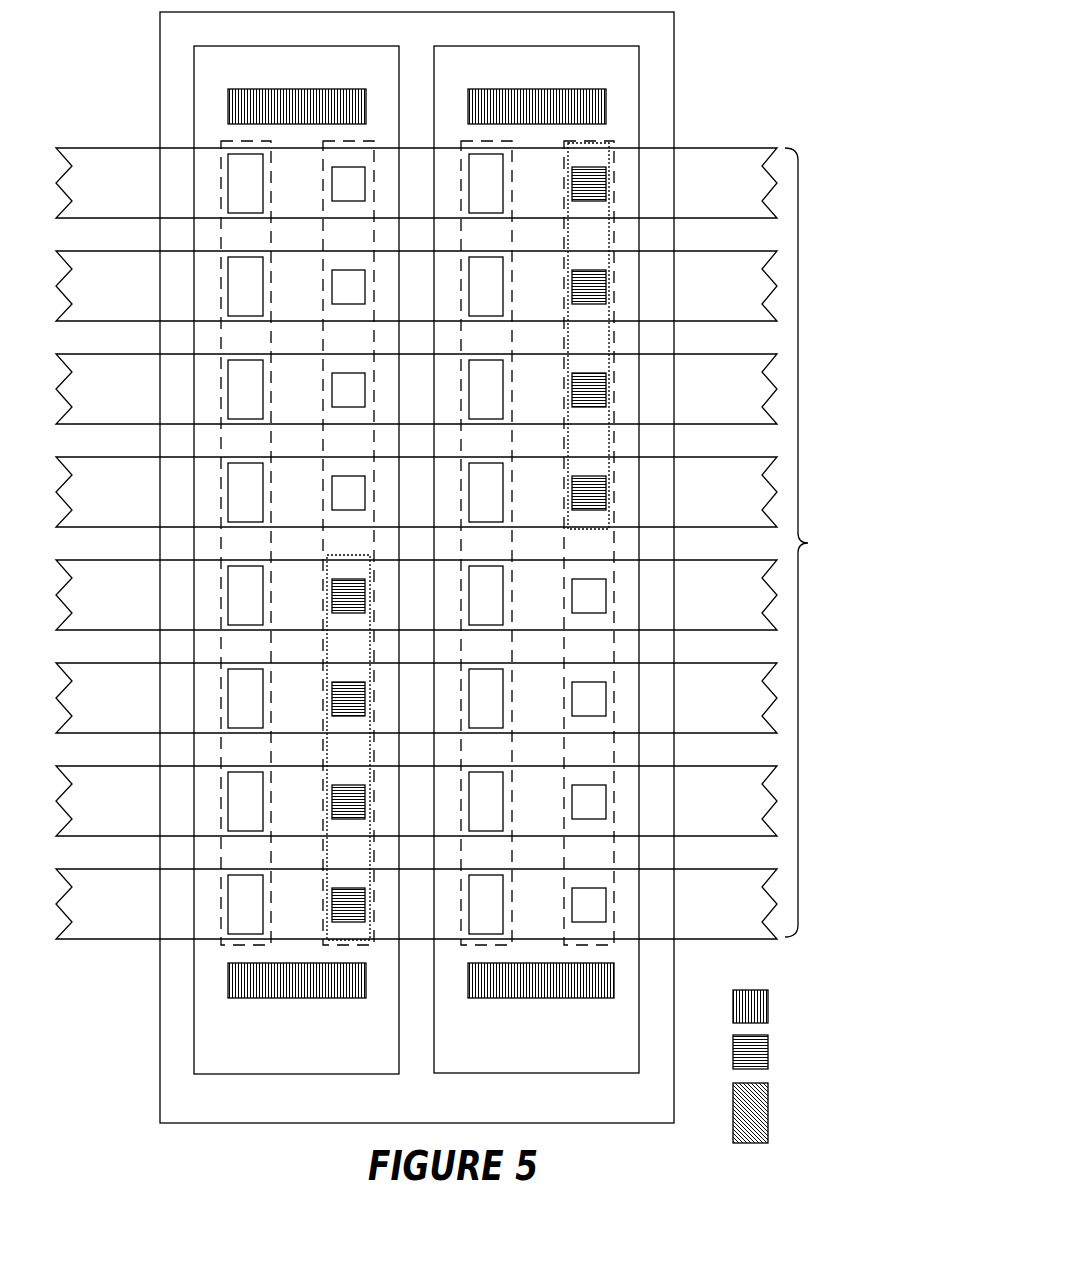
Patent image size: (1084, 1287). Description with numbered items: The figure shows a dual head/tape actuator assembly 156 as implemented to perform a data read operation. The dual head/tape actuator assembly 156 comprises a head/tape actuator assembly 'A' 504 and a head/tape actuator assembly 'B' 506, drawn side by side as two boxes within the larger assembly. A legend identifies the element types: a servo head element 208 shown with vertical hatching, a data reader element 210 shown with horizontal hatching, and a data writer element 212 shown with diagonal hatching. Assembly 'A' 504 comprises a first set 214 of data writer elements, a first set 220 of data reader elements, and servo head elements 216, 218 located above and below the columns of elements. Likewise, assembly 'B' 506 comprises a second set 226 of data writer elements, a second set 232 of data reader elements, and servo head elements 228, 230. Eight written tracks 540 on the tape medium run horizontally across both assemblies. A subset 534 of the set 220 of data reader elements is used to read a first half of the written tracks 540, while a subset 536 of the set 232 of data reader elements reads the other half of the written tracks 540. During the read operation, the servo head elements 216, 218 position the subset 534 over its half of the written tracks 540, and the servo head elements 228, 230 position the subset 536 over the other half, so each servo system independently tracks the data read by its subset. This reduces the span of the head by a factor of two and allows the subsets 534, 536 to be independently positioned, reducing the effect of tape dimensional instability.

The dual head/tape actuator assembly 156 is at (565, 1121).
The head/tape actuator assembly 'A' 504 is at (373, 1069).
The head/tape actuator assembly 'B' 506 is at (613, 1069).
The servo head element 216 is at (262, 92).
The servo head element 218 is at (262, 998).
The servo head element 228 is at (502, 92).
The servo head element 230 is at (502, 998).
The first set of data writer elements 214 is at (262, 551).
The first set of data reader elements 220 is at (348, 543).
The second set of data writer elements 226 is at (501, 551).
The second set of data reader elements 232 is at (589, 543).
The subset of data reader elements 534 is at (363, 756).
The subset of data reader elements 536 is at (603, 346).
The written tracks 540 is at (808, 543).
The servo head element 208 is at (733, 992).
The data reader element 210 is at (733, 1045).
The data writer element 212 is at (733, 1100).